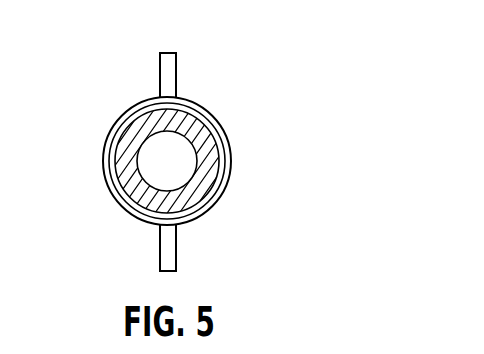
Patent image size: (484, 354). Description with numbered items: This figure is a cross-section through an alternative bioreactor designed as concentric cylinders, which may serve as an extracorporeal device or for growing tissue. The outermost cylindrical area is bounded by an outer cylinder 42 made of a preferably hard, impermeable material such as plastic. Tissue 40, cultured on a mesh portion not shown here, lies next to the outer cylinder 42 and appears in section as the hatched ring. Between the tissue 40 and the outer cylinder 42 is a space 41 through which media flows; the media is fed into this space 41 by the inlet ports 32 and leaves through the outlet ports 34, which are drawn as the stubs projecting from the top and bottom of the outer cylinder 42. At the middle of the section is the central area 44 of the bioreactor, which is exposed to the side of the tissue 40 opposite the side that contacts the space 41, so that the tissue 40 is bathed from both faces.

The inlet ports 32 is at (177, 52).
The outlet ports 34 is at (177, 257).
The tissue 40 is at (216, 165).
The space 41 is at (221, 191).
The outer cylinder 42 is at (213, 111).
The central area 44 is at (149, 170).